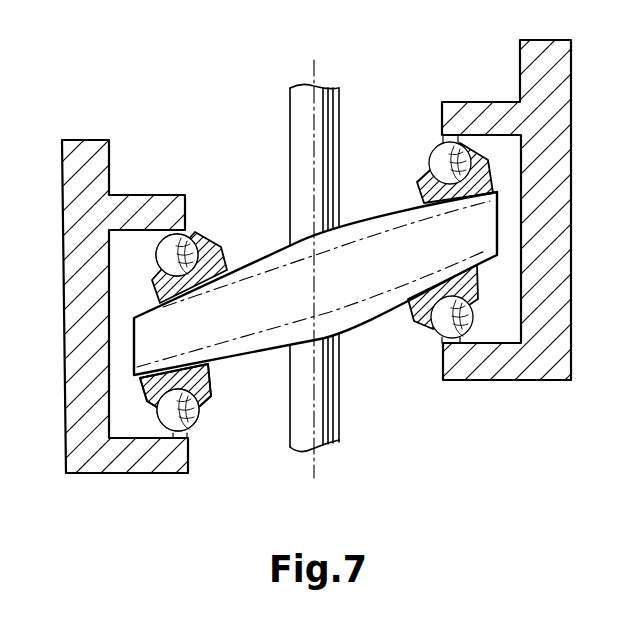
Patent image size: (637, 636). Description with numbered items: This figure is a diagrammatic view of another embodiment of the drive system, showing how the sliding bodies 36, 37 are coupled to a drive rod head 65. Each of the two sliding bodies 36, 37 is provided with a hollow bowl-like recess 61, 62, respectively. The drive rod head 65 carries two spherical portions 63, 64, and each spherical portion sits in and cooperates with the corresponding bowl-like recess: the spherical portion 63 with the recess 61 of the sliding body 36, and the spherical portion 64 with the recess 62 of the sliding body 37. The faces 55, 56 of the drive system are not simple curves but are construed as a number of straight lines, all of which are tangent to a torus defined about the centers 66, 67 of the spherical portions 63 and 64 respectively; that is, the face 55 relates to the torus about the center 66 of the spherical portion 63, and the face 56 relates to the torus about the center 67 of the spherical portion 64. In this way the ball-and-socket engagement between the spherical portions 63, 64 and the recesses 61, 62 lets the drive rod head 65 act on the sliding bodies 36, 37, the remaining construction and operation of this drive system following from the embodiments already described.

The sliding body 36 is at (196, 296).
The sliding body 37 is at (197, 372).
The face 55 is at (289, 232).
The face 56 is at (288, 351).
The hollow bowl-like recess 61 is at (215, 258).
The hollow bowl-like recess 62 is at (194, 399).
The spherical portion 63 is at (202, 238).
The spherical portion 64 is at (178, 430).
The drive rod head 65 is at (81, 257).
The center 66 is at (170, 236).
The center 67 is at (177, 438).